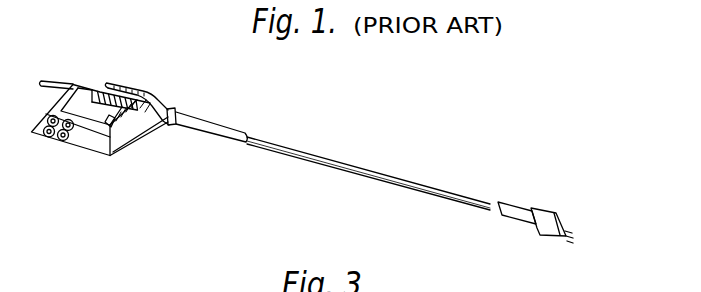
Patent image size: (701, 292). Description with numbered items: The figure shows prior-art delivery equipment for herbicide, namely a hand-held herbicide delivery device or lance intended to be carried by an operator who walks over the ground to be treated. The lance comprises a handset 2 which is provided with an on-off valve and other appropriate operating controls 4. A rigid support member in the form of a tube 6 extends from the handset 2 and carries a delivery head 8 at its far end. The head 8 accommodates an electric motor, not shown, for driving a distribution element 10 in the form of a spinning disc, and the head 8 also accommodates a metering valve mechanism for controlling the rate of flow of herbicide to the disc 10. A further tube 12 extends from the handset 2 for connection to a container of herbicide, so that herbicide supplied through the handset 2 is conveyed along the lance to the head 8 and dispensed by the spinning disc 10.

The handset 2 is at (136, 82).
The operating controls 4 is at (49, 140).
The tube 6 is at (390, 174).
The delivery head 8 is at (567, 216).
The distribution element 10 is at (570, 243).
The tube 12 is at (66, 82).